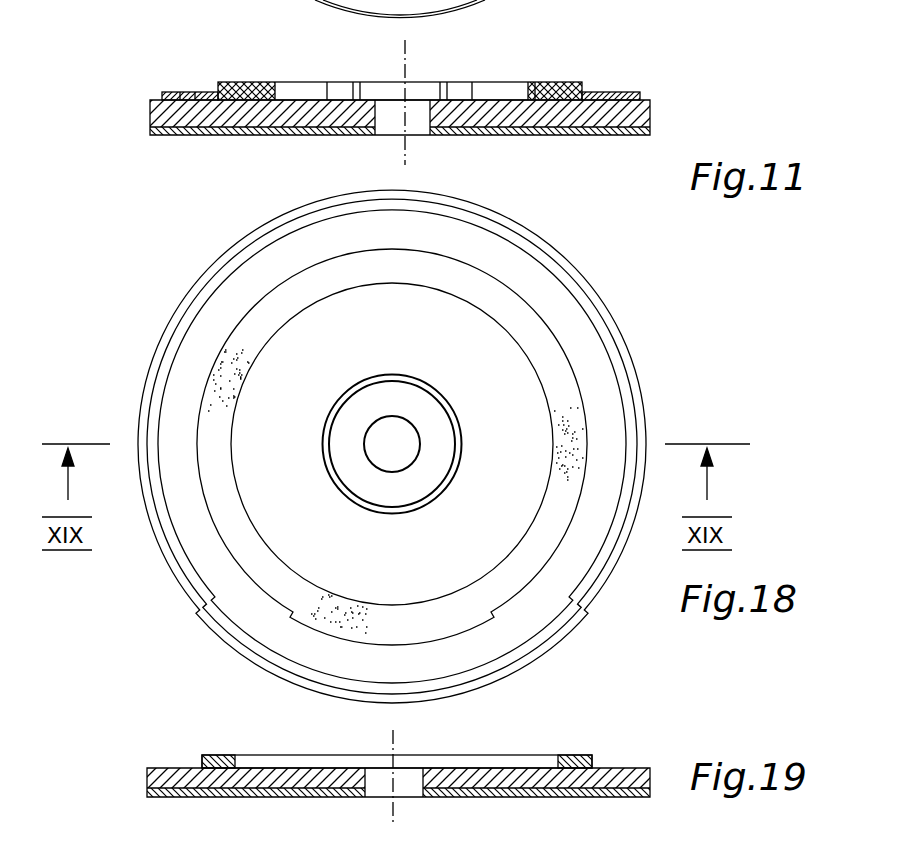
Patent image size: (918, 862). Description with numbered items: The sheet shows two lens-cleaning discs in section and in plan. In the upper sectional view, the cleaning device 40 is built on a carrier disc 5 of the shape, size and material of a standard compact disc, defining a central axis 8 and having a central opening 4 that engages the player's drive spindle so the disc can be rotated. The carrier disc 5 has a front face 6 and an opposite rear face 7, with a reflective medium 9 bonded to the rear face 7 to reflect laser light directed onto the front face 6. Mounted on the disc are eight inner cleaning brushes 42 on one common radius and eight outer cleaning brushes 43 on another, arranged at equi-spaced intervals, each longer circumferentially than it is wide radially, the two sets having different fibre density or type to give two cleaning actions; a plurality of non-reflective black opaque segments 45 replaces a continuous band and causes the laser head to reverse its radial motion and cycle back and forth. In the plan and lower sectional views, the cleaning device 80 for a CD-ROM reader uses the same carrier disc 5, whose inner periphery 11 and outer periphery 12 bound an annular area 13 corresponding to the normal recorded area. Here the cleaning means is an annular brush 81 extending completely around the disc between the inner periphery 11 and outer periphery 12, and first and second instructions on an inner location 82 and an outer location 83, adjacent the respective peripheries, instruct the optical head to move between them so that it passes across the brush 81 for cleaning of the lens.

In FIG. 11, the opening 4 is at (368, 128).
In FIG. 19, the opening 4 is at (420, 775).
In FIG. 11, the carrier disc 5 is at (652, 116).
In FIG. 18, the carrier disc 5 is at (500, 252).
In FIG. 19, the carrier disc 5 is at (632, 775).
In FIG. 11, the front face 6 is at (645, 97).
In FIG. 18, the front face 6 is at (553, 292).
In FIG. 19, the front face 6 is at (610, 768).
In FIG. 11, the rear face 7 is at (610, 135).
In FIG. 19, the rear face 7 is at (535, 790).
In FIG. 11, the central axis 8 is at (408, 156).
In FIG. 18, the central axis 8 is at (393, 444).
In FIG. 19, the central axis 8 is at (393, 808).
In FIG. 11, the reflective medium 9 is at (550, 135).
In FIG. 19, the reflective medium 9 is at (612, 790).
In FIG. 18, the inner periphery 11 is at (435, 405).
In FIG. 11, the outer periphery 12 is at (641, 95).
In FIG. 18, the outer periphery 12 is at (630, 362).
In FIG. 18, the annular area 13 is at (582, 575).
In FIG. 11, the cleaning device 40 is at (156, 161).
In FIG. 11, the inner cleaning brushes 42 is at (256, 90).
In FIG. 11, the outer cleaning brushes 43 is at (235, 92).
In FIG. 11, the non-reflective black opaque segments 45 is at (622, 92).
In FIG. 18, the cleaning device 80 is at (641, 301).
In FIG. 19, the cleaning device 80 is at (172, 728).
In FIG. 18, the annular brush 81 is at (553, 373).
In FIG. 19, the annular brush 81 is at (572, 755).
In FIG. 18, the inner location 82 is at (380, 382).
In FIG. 18, the outer location 83 is at (627, 393).